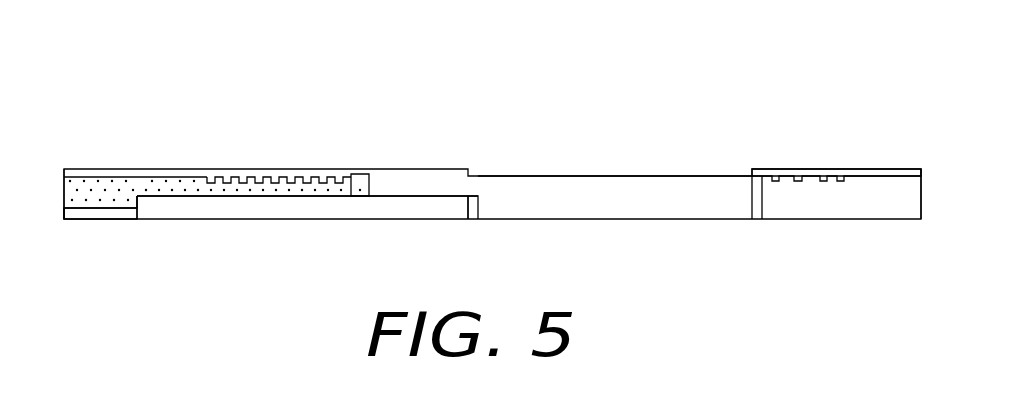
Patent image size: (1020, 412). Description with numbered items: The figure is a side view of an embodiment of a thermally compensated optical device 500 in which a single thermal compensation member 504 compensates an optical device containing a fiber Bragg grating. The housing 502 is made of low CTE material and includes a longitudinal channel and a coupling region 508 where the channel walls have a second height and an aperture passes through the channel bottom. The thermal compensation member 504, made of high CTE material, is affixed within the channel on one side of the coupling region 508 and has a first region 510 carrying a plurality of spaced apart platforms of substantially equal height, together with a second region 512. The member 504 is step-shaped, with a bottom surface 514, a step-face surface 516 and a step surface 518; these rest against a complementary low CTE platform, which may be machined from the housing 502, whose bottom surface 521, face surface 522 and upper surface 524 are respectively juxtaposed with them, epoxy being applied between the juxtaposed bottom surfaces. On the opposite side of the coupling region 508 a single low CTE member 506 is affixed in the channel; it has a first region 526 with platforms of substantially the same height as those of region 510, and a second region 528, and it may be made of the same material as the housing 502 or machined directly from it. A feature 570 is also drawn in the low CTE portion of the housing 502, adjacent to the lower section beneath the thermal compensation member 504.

The temperature compensated package assembly 500 is at (802, 100).
The housing 502 is at (593, 220).
The thermal compensation member 504 is at (66, 190).
The low CTE member 506 is at (923, 187).
The coupling region 508 is at (590, 176).
The first region 510 is at (293, 177).
The second region 512 is at (118, 118).
The bottom surface 514 is at (107, 210).
The step-face surface 516 is at (147, 207).
The step surface 518 is at (243, 197).
The bottom surface 521 is at (80, 210).
The face surface 522 is at (140, 200).
The upper surface 524 is at (357, 195).
The first region 526 is at (795, 175).
The second region 528 is at (865, 173).
The slot / divider in substrate 570 is at (458, 207).